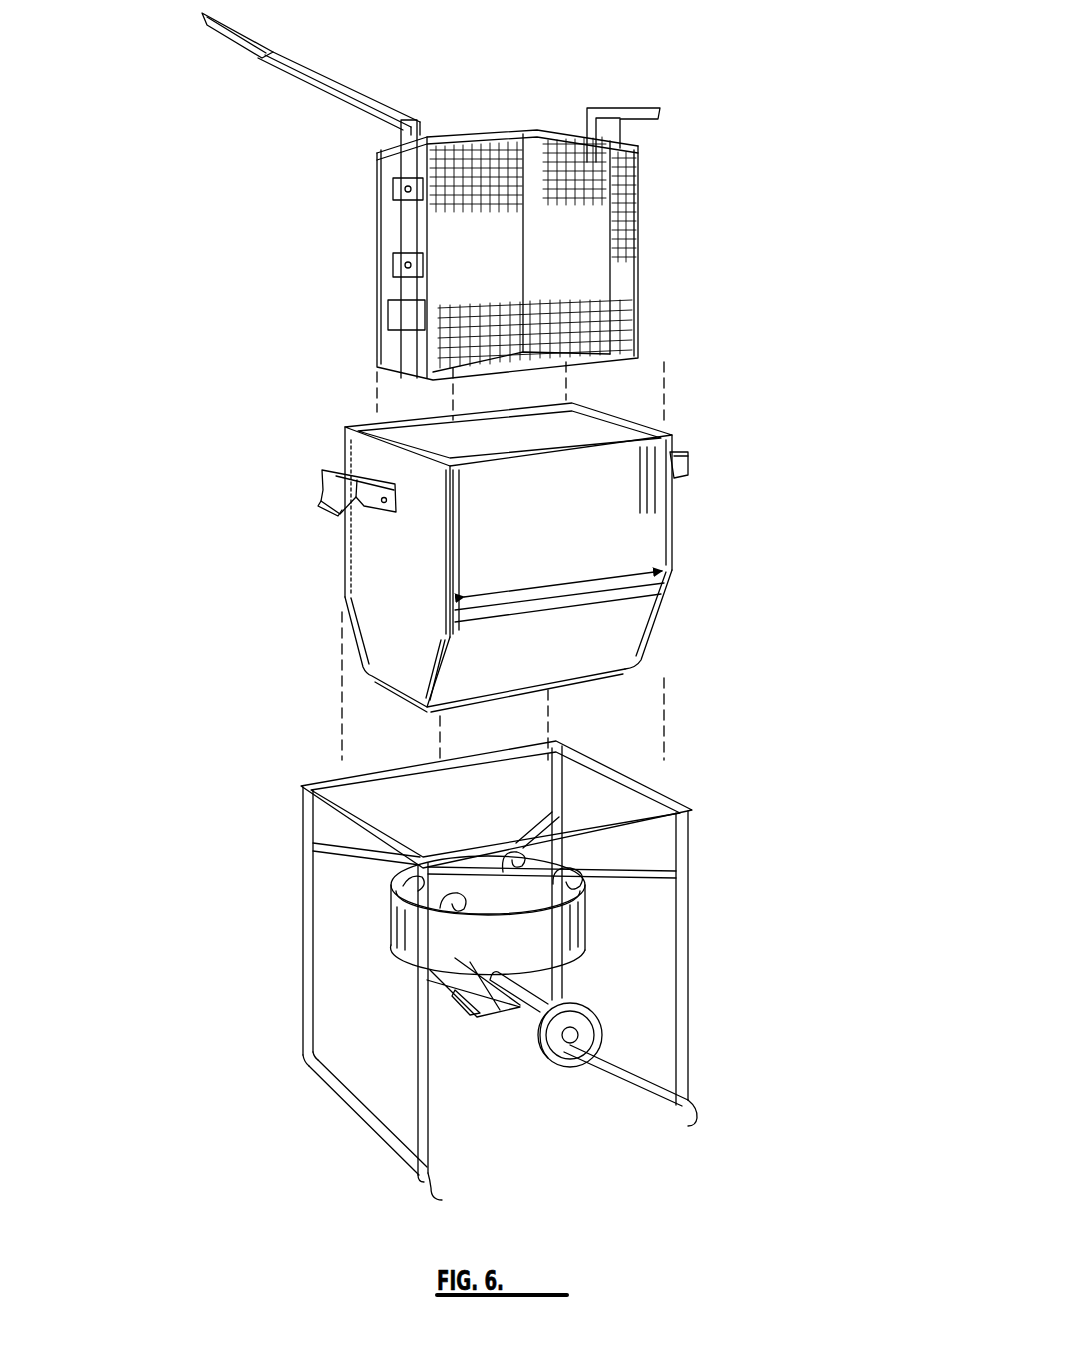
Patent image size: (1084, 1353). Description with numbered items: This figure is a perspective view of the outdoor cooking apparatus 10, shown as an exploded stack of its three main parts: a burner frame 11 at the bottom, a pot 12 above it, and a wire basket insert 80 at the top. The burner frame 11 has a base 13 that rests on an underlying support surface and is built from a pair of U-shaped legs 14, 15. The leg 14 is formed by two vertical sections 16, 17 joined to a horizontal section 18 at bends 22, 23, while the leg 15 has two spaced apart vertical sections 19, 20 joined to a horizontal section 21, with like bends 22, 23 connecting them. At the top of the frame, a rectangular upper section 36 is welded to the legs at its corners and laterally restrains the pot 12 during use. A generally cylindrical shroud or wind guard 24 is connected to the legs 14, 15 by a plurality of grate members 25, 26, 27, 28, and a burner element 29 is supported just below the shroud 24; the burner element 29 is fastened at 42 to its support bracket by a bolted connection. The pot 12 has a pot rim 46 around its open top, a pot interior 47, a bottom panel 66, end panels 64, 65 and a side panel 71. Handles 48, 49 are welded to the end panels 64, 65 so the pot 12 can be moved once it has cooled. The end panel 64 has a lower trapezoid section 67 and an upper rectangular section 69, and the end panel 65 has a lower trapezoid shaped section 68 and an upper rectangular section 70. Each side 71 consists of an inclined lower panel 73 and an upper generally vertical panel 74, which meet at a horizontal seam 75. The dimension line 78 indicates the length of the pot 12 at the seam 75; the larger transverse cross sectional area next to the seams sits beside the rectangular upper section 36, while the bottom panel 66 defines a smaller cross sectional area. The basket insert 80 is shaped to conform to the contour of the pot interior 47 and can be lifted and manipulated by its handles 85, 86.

The outdoor cooking apparatus 10 is at (250, 608).
The burner frame 11 is at (498, 975).
The pot 12 is at (518, 555).
The base 13 is at (393, 1147).
The leg 14 is at (298, 1015).
The leg 15 is at (688, 1023).
The vertical section 16 is at (303, 928).
The vertical section 17 is at (430, 1138).
The horizontal section 18 is at (355, 1110).
The vertical section 19 is at (556, 782).
The vertical section 20 is at (686, 955).
The horizontal section 21 is at (640, 1083).
The bend 22 is at (310, 1057).
The bend 23 is at (442, 1200).
The shroud or wind guard 24 is at (486, 967).
The grate member 25 is at (427, 968).
The grate member 26 is at (377, 853).
The grate member 27 is at (530, 827).
The grate member 28 is at (653, 875).
The burner element 29 is at (530, 1000).
The rectangular upper section 36 is at (318, 782).
The fastening location 42 is at (467, 1013).
The pot rim 46 is at (653, 423).
The pot interior 47 is at (415, 433).
The handle 48 is at (338, 502).
The handle 49 is at (688, 463).
The end panel 64 is at (395, 551).
The end panel 65 is at (670, 573).
The bottom panel 66 is at (437, 706).
The lower trapezoid section 67 is at (401, 640).
The lower trapezoid shaped section 68 is at (663, 610).
The upper rectangular section 69 is at (340, 465).
The upper rectangular section 70 is at (668, 517).
The side panel 71 is at (632, 465).
The inclined lower panel 73 is at (630, 637).
The upper vertically oriented panel 74 is at (572, 500).
The horizontal seam 75 is at (575, 608).
The dimension line 78 is at (590, 578).
The basket insert 80 is at (633, 213).
The handle 85 is at (315, 88).
The handle 86 is at (637, 108).